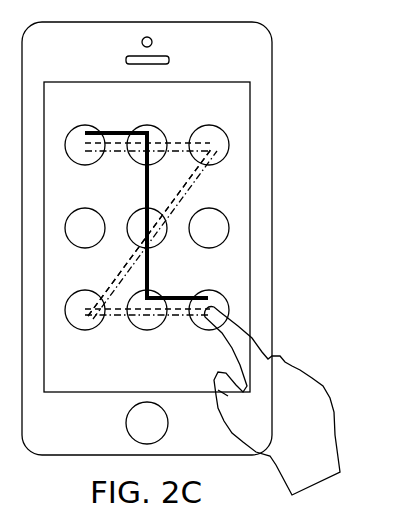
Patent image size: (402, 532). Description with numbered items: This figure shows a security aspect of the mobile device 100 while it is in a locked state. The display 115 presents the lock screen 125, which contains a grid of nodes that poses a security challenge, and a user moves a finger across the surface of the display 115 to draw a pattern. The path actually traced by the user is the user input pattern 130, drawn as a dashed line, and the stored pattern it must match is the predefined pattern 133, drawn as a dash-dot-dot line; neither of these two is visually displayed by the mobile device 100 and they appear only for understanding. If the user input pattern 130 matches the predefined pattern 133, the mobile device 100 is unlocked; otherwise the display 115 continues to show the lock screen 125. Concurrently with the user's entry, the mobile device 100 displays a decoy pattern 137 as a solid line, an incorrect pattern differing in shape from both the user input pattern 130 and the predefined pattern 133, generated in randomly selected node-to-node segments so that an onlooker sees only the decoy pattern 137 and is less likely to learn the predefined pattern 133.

The mobile device 100 is at (272, 52).
The display 115 is at (250, 110).
The lock screen 125 is at (252, 147).
The user input pattern 130 is at (113, 271).
The predefined pattern 133 is at (196, 181).
The decoy pattern 137 is at (150, 272).